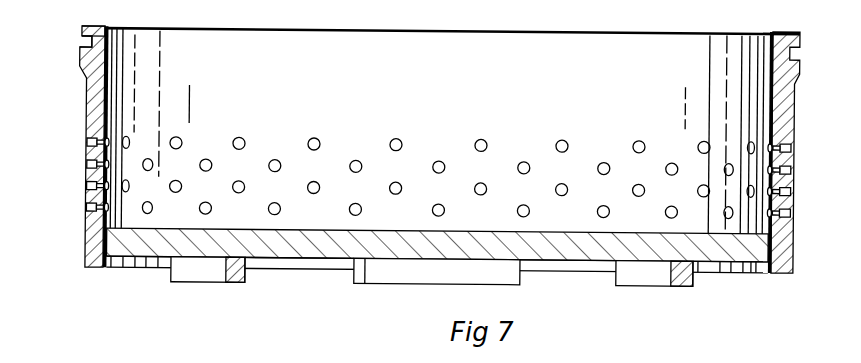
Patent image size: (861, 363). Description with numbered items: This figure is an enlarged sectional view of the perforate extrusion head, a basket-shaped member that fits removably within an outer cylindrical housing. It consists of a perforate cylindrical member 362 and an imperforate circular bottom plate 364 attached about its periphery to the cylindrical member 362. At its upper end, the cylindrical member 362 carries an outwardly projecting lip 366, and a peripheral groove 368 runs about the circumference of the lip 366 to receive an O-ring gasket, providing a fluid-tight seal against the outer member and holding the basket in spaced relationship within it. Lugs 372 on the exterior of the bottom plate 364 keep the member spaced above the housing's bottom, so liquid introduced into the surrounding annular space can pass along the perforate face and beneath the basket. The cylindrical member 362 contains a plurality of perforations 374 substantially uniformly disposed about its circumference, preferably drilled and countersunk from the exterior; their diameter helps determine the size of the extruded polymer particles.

The perforate cylindrical member 362 is at (88, 107).
The imperforate circular bottom plate 364 is at (284, 226).
The outwardly projecting lip 366 is at (82, 27).
The peripheral groove 368 is at (82, 51).
The lugs 372 is at (200, 281).
The perforations 374 is at (88, 207).